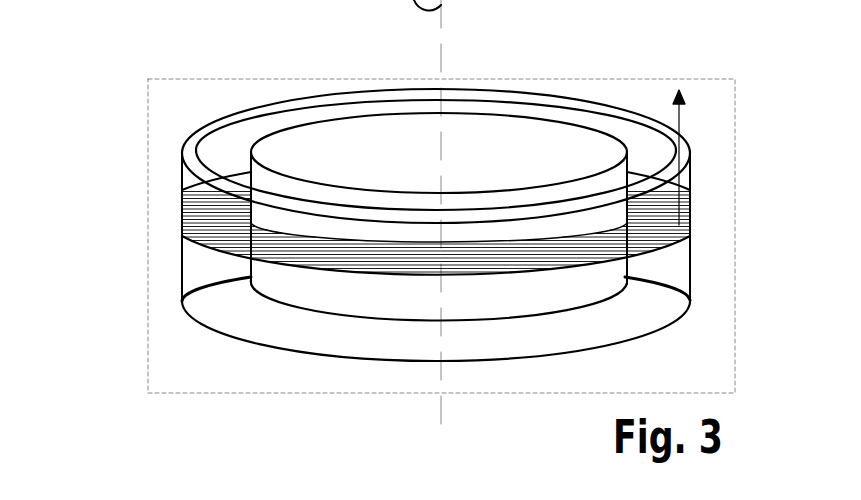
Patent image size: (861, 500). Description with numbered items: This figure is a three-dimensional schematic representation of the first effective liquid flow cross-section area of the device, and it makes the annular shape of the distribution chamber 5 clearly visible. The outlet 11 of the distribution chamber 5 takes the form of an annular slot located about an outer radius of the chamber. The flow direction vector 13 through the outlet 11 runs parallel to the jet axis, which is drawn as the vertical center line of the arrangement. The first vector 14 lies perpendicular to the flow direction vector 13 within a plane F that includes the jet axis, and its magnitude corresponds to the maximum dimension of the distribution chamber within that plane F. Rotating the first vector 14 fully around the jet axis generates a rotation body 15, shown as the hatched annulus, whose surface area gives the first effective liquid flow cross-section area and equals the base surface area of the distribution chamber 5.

The distribution chamber 5 is at (200, 266).
The outlet of the distribution chamber 11 is at (189, 158).
The flow direction vector 13 is at (679, 122).
The first vector 14 is at (678, 222).
The rotation body 15 is at (668, 247).
The plane F is at (715, 78).